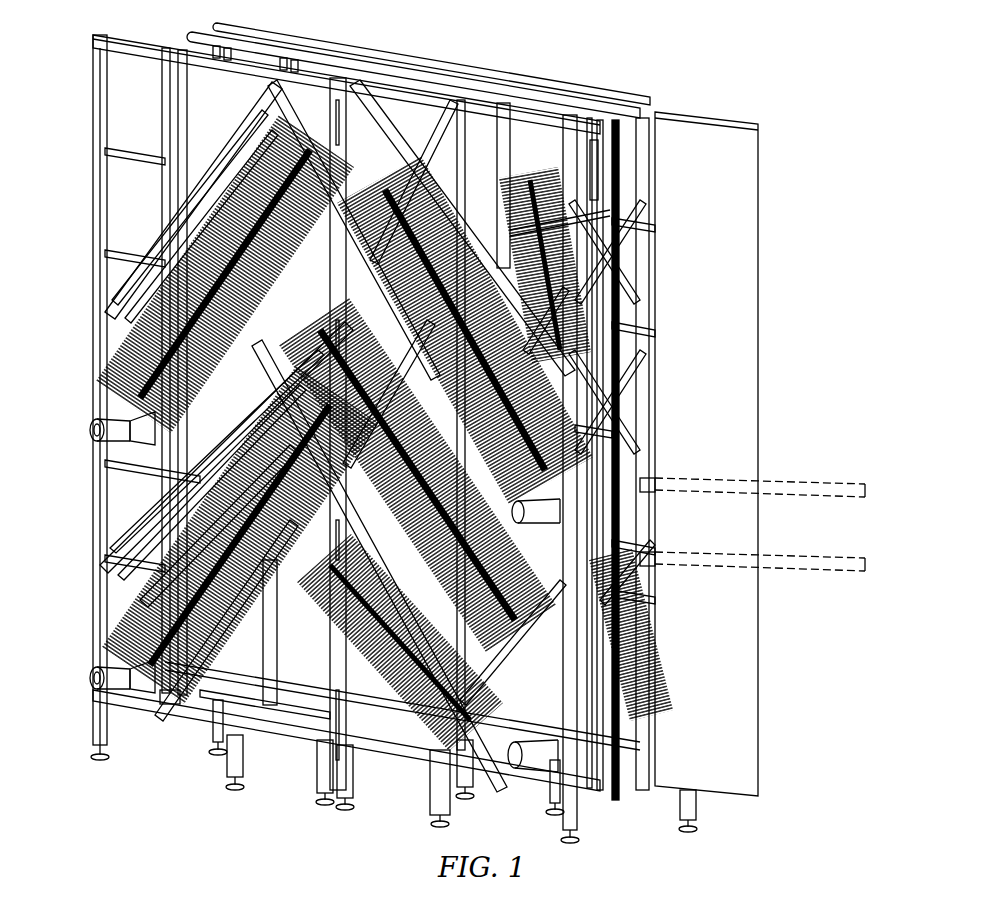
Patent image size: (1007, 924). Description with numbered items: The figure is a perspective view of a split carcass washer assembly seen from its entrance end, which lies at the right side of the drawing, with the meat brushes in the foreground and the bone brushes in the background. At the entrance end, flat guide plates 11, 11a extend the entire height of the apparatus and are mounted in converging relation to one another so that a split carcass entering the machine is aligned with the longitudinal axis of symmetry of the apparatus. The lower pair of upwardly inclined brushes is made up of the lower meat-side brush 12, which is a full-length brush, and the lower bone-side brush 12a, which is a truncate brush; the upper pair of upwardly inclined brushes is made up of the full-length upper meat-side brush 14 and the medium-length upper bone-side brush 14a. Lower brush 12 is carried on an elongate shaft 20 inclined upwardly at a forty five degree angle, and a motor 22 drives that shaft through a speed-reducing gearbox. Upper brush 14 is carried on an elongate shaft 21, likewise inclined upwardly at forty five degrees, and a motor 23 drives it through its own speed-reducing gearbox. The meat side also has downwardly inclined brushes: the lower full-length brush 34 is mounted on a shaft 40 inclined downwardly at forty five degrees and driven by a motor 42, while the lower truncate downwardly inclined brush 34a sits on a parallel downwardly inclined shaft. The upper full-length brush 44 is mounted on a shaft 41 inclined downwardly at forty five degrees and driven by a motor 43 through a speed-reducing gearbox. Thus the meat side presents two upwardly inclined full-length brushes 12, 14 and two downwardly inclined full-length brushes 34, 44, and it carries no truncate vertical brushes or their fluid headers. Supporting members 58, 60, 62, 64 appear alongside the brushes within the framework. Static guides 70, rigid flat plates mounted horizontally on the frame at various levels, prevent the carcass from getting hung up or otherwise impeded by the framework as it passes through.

The flat guide plate 11 is at (620, 275).
The flat guide plate 11a is at (725, 373).
The lower meat-side brush 12 is at (462, 755).
The lower bone-side brush 12a is at (640, 650).
The upper meat-side brush 14 is at (590, 410).
The upper bone-side brush 14a is at (550, 185).
The elongate shaft 20 is at (445, 745).
The elongate shaft 21 is at (590, 430).
The motor 22 is at (540, 770).
The motor 23 is at (552, 520).
The lower full-length brush 34 is at (135, 622).
The lower truncate downwardly inclined brush 34a is at (235, 722).
The shaft 40 is at (170, 706).
The shaft 41 is at (138, 396).
The motor 42 is at (92, 678).
The motor 43 is at (92, 430).
The upper full-length brush 44 is at (130, 345).
The brush support bar 58 is at (160, 522).
The brush support bar 60 is at (128, 578).
The upper brush support bar 62 is at (200, 240).
The upper brush support bar 64 is at (190, 262).
The static guides 70 is at (130, 148).